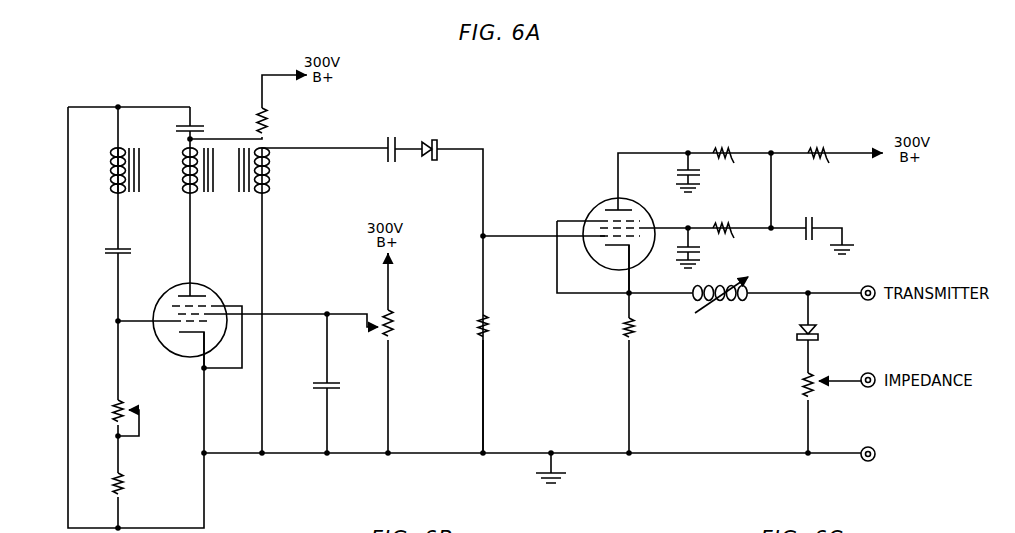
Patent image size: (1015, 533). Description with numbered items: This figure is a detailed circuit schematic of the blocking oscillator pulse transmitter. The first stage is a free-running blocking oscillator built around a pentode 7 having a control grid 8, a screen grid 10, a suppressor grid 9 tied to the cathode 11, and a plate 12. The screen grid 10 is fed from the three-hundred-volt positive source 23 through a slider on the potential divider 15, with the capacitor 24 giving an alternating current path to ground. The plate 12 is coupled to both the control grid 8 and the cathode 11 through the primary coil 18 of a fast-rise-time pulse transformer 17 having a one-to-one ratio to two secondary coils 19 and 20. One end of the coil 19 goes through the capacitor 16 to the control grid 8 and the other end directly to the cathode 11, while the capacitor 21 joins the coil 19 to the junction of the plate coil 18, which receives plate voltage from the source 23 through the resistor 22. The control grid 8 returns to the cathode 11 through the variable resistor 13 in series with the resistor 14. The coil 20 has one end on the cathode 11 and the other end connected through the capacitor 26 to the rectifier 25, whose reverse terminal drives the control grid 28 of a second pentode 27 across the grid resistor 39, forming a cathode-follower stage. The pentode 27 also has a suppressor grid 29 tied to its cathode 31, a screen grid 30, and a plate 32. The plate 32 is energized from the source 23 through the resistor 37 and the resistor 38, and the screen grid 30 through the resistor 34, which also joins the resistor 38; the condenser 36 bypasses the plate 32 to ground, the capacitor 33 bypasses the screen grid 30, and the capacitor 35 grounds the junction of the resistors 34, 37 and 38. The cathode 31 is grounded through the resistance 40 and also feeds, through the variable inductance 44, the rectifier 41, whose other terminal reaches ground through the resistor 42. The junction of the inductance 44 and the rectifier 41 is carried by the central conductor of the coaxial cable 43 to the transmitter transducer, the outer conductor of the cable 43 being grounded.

The pentode 7 is at (206, 290).
The control grid 8 is at (178, 326).
The suppressor grid 9 is at (214, 301).
The screen grid 10 is at (176, 309).
The cathode 11 is at (200, 340).
The plate 12 is at (186, 296).
The variable resistor 13 is at (112, 406).
The resistor 14 is at (112, 480).
The potential divider 15 is at (380, 317).
The capacitor 16 is at (112, 257).
The pulse transformer 17 is at (165, 215).
The primary coil 18 is at (183, 160).
The secondary coil 19 is at (108, 158).
The secondary coil 20 is at (269, 170).
The capacitor 21 is at (194, 124).
The resistor 22 is at (269, 123).
The 300 volt positive source 23 is at (288, 72).
The capacitor 24 is at (331, 381).
The rectifier 25 is at (436, 140).
The capacitor 26 is at (395, 137).
The pentode 27 is at (613, 200).
The control grid 28 is at (600, 239).
The suppressor grid 29 is at (641, 225).
The screen grid 30 is at (600, 223).
The cathode 31 is at (625, 249).
The plate 32 is at (627, 206).
The capacitor 33 is at (702, 250).
The resistor 34 is at (728, 223).
The capacitor 35 is at (814, 221).
The condenser 36 is at (701, 178).
The resistor 37 is at (729, 149).
The resistor 38 is at (830, 149).
The grid resistor 39 is at (476, 322).
The resistance 40 is at (636, 323).
The rectifier 41 is at (820, 334).
The resistor 42 is at (797, 376).
The cable 43 is at (872, 286).
The inductance 44 is at (732, 302).